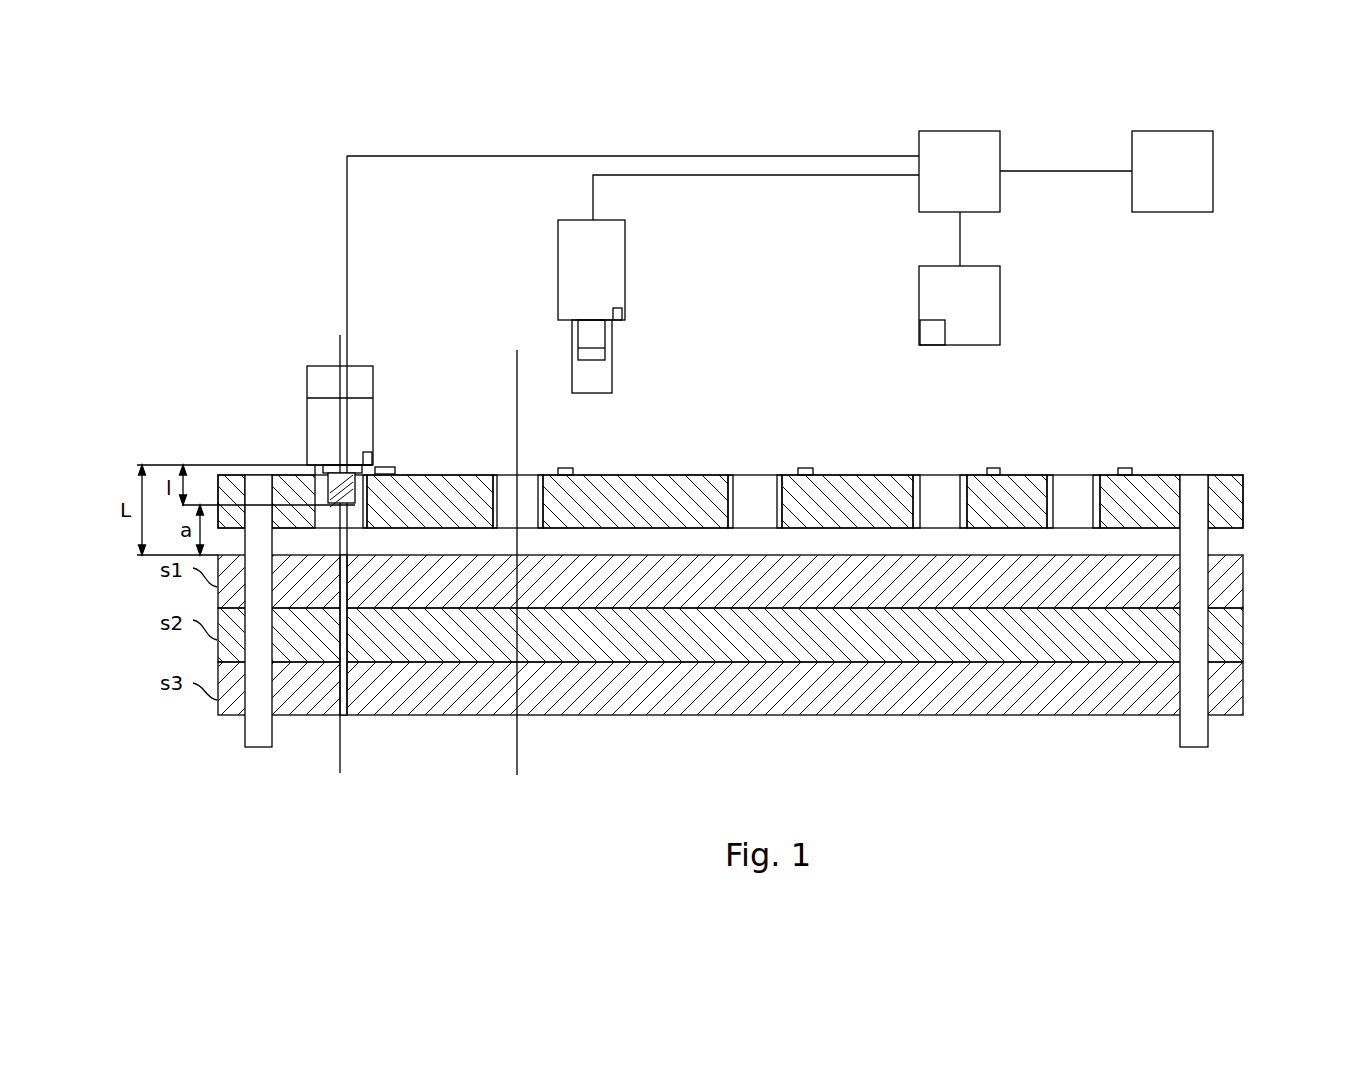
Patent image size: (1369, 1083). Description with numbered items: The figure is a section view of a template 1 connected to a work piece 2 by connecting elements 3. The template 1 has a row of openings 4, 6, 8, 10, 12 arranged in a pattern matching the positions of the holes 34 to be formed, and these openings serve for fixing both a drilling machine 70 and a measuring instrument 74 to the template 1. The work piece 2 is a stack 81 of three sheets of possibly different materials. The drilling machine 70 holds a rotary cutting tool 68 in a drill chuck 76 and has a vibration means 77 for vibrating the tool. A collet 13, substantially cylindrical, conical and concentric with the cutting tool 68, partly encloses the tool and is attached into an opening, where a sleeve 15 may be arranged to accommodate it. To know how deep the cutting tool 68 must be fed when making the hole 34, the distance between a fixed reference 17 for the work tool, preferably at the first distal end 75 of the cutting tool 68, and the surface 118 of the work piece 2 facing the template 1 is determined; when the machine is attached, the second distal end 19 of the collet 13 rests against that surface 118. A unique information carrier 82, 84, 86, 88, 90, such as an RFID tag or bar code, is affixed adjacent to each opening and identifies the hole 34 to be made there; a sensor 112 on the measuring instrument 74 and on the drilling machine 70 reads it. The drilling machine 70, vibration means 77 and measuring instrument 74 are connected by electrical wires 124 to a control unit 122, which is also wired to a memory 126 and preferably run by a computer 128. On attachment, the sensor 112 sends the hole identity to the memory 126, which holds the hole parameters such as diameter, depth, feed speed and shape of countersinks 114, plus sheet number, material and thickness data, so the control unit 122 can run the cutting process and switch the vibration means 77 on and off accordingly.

The template 1 is at (827, 475).
The work piece 2 is at (1262, 643).
The connecting elements 3 is at (258, 748).
The opening 4 is at (367, 502).
The opening 6 is at (367, 483).
The opening 8 is at (728, 497).
The opening 10 is at (915, 497).
The opening 12 is at (1050, 497).
The collet 13 is at (367, 522).
The sleeve 15 is at (772, 497).
The fixed reference 17 is at (330, 556).
The second distal end 19 is at (387, 555).
The hole 34 is at (345, 716).
The rotary cutting tool 68 is at (382, 466).
The drilling machine 70 is at (377, 408).
The measuring instrument 74 is at (625, 263).
The first distal end 75 is at (328, 503).
The drill chuck 76 is at (318, 465).
The vibration means 77 is at (377, 373).
The stack 81 is at (1270, 587).
The information carrier 82 is at (395, 468).
The information carrier 84 is at (573, 468).
The information carrier 86 is at (808, 468).
The information carrier 88 is at (993, 468).
The information carrier 90 is at (1127, 468).
The sensor 112 is at (372, 452).
The countersink 114 is at (345, 557).
The surface 118 is at (805, 553).
The control unit 122 is at (1000, 195).
The electrical wires 124 is at (375, 156).
The memory 126 is at (1197, 212).
The computer 128 is at (1000, 300).